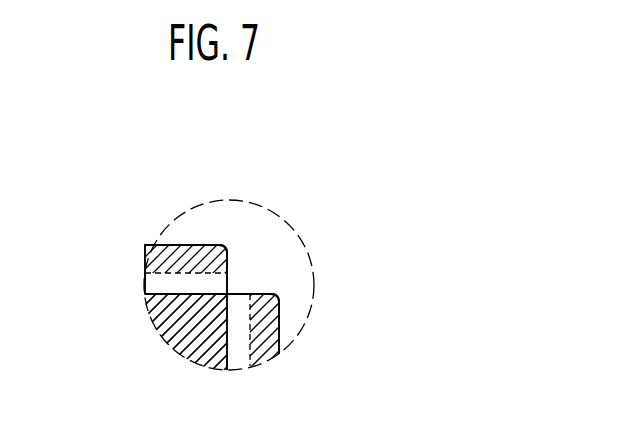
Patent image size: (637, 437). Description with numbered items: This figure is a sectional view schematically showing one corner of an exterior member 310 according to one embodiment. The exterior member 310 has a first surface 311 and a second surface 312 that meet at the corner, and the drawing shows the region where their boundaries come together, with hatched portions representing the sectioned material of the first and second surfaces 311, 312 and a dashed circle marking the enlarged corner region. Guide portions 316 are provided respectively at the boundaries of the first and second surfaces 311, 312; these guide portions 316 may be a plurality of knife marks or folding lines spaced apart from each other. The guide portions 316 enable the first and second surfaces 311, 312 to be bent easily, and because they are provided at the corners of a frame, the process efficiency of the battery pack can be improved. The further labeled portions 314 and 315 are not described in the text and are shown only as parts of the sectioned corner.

The exterior member 310 is at (318, 151).
The first surface 311 is at (197, 331).
The second surface 312 is at (205, 245).
The first portion 314 is at (166, 313).
The second portion 315 is at (158, 283).
The guide portion 316 is at (176, 273).